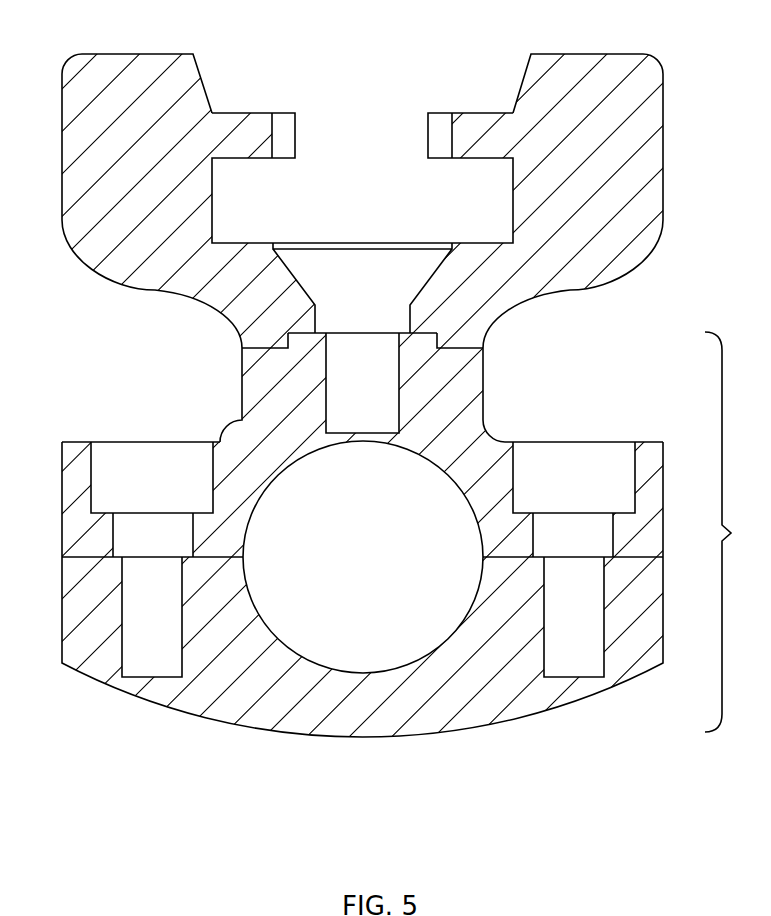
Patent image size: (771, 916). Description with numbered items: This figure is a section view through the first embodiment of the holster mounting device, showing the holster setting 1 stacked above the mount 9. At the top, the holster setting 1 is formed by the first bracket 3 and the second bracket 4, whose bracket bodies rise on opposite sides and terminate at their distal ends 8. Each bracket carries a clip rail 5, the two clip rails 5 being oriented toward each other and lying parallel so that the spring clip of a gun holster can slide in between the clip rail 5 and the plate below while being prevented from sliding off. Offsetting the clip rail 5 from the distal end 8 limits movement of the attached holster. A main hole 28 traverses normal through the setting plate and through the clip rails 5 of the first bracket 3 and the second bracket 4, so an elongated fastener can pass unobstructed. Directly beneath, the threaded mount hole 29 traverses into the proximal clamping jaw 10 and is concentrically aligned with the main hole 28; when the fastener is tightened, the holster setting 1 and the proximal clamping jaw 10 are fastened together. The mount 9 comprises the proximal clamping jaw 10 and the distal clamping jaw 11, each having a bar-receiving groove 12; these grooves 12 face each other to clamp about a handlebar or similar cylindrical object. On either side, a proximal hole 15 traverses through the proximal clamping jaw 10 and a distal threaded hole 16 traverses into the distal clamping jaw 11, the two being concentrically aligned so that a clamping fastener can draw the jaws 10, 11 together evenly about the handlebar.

The holster setting 1 is at (690, 78).
The first bracket 3 is at (64, 152).
The second bracket 4 is at (660, 157).
The clip rail 5 is at (232, 115).
The distal end 8 is at (150, 50).
The mount 9 is at (726, 532).
The proximal clamping jaw 10 is at (65, 487).
The distal clamping jaw 11 is at (66, 609).
The bar-receiving groove 12 is at (264, 500).
The proximal hole 15 is at (146, 450).
The distal threaded hole 16 is at (138, 571).
The main hole 28 is at (357, 260).
The threaded mount hole 29 is at (352, 352).